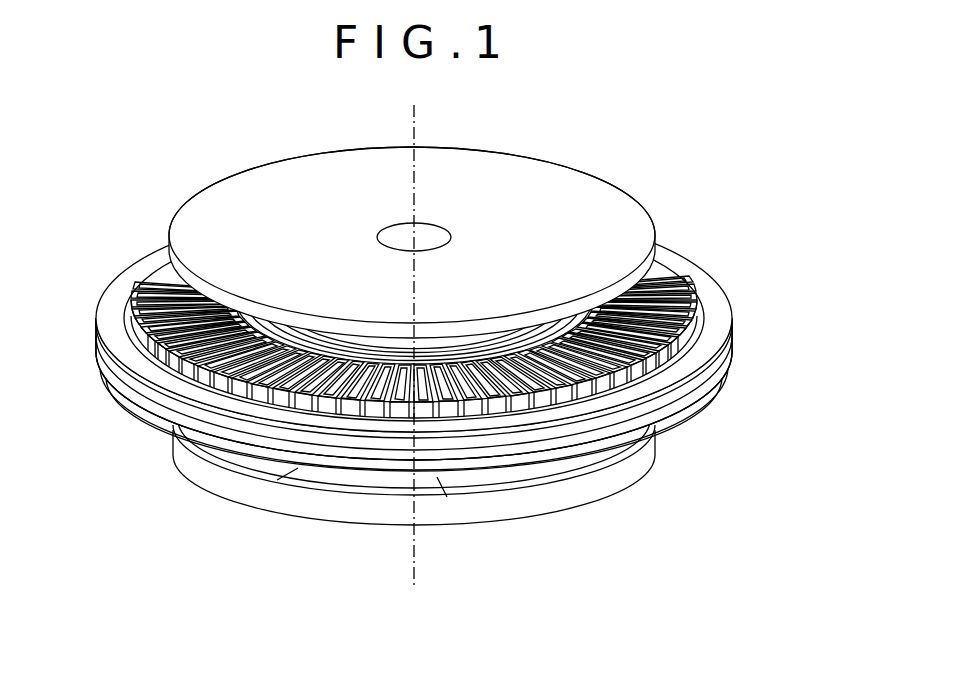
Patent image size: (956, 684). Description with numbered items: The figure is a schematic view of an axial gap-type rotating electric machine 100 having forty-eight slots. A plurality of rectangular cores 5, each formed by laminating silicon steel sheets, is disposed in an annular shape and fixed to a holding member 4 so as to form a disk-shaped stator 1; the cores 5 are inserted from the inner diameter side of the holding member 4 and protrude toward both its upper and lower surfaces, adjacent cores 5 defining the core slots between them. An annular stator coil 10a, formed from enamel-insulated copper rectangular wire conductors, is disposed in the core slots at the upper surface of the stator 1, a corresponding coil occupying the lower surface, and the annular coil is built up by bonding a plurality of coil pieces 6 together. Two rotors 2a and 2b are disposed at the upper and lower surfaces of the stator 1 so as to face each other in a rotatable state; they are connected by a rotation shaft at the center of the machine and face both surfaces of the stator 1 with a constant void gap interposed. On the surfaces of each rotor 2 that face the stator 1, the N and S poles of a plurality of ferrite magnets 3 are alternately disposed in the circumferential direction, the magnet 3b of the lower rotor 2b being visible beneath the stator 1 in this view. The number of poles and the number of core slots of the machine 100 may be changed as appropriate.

The axial gap-type rotating electric machine 100 is at (429, 345).
The stator 1 is at (465, 406).
The rotor 2 is at (455, 475).
The upper rotor 2a is at (596, 200).
The lower rotor 2b is at (612, 480).
The magnet 3 is at (414, 487).
The magnet of the lower rotor 3b is at (510, 480).
The holding member 4 is at (113, 304).
The core 5 is at (377, 405).
The coil piece 6 is at (695, 318).
The stator coil 10a is at (695, 338).